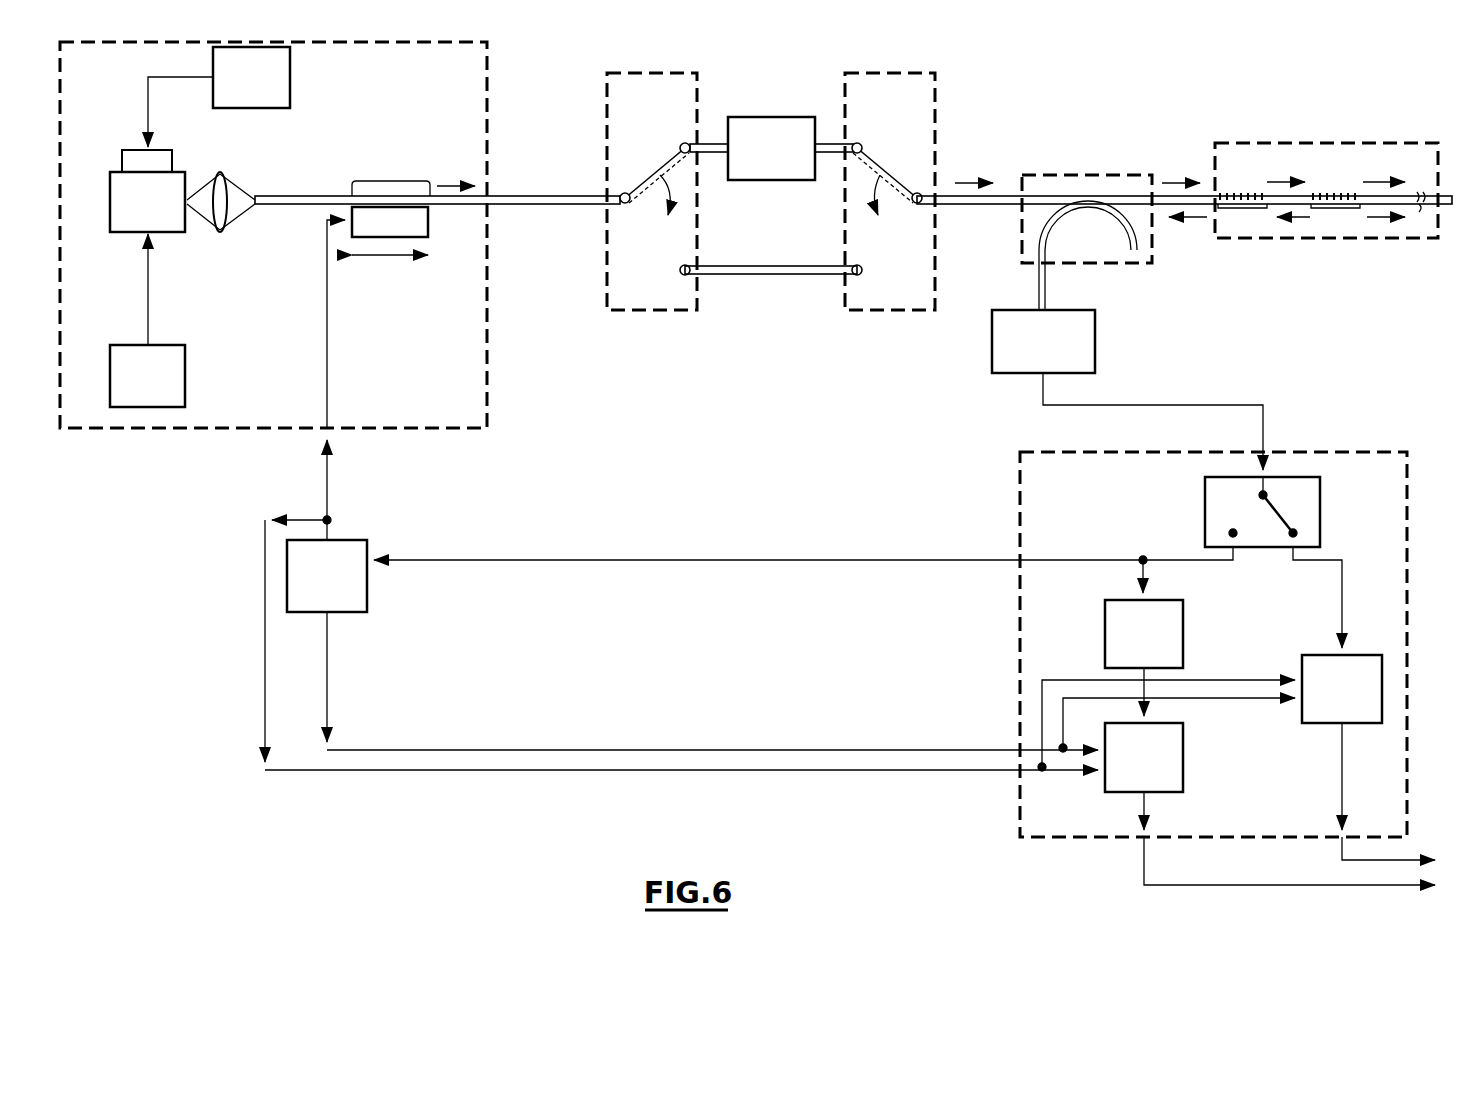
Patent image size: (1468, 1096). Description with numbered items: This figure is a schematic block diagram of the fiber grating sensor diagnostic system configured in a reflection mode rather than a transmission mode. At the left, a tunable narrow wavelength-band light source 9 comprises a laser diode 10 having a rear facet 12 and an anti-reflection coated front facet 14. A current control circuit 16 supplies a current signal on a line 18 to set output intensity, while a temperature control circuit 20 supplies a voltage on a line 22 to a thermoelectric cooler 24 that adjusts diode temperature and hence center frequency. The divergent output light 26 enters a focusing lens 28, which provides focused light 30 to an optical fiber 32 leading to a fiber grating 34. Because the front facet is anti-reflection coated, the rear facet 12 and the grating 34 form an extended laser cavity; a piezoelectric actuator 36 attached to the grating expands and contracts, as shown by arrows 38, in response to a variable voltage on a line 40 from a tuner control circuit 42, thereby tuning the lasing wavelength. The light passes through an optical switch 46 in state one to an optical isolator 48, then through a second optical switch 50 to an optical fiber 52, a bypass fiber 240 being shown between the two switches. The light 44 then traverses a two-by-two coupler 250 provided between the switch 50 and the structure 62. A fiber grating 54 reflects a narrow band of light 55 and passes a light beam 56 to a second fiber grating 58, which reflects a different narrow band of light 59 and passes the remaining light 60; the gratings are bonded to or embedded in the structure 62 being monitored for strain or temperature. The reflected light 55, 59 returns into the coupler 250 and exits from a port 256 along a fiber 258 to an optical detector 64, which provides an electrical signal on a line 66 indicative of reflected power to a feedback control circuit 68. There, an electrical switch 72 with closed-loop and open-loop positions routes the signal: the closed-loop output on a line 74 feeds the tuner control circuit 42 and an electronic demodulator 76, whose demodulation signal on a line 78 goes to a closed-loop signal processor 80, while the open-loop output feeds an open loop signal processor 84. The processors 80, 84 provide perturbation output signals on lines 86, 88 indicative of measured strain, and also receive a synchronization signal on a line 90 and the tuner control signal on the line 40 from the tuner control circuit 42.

The tunable narrow wavelength-band light source 9 is at (162, 428).
The laser diode 10 is at (118, 180).
The rear facet 12 is at (110, 232).
The front facet 14 is at (182, 232).
The current control circuit 16 is at (185, 375).
The line 18 is at (148, 318).
The temperature control circuit 20 is at (213, 64).
The line 22 is at (148, 77).
The thermoelectric cooler 24 is at (135, 155).
The diverging beam 26 is at (212, 196).
The focusing lens 28 is at (222, 228).
The focused light 30 is at (230, 196).
The optical fiber 32 is at (300, 196).
The fiber grating 34 is at (390, 181).
The piezoelectric actuator 36 is at (430, 215).
The arrows 38 is at (390, 258).
The line 40 is at (265, 622).
The tuner control circuit 42 is at (374, 593).
The light 44 is at (442, 186).
The optical switch 46 is at (615, 73).
The optical isolator 48 is at (785, 115).
The optical switch 50 is at (857, 73).
The optical fiber 52 is at (940, 190).
The fiber grating 54 is at (1242, 215).
The reflected light 55 is at (1195, 222).
The light beam 56 is at (1265, 182).
The fiber grating 58 is at (1335, 215).
The reflected light 59 is at (1300, 222).
The light 60 is at (1400, 182).
The structure 62 is at (1297, 143).
The optical detector 64 is at (1098, 356).
The line 66 is at (1263, 425).
The feedback control circuit 68 is at (1345, 452).
The electrical switch 72 is at (1320, 520).
The line 74 is at (418, 560).
The electronic demodulator 76 is at (1185, 655).
The line 78 is at (1160, 698).
The closed-loop signal processor 80 is at (1185, 788).
The open loop signal processor 84 is at (1325, 727).
The line 86 is at (1144, 855).
The line 88 is at (1342, 855).
The line 90 is at (428, 750).
The bypass optical fiber 240 is at (745, 274).
The 2×2 coupler 250 is at (1093, 178).
The port 256 is at (1048, 290).
The fiber 258 is at (1039, 298).